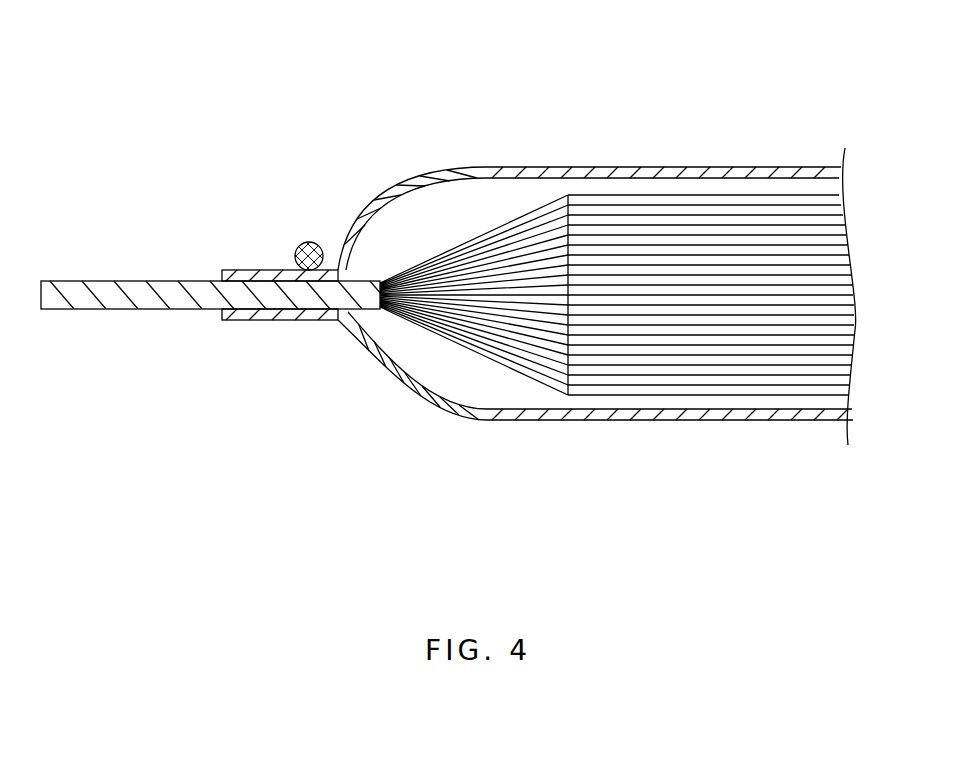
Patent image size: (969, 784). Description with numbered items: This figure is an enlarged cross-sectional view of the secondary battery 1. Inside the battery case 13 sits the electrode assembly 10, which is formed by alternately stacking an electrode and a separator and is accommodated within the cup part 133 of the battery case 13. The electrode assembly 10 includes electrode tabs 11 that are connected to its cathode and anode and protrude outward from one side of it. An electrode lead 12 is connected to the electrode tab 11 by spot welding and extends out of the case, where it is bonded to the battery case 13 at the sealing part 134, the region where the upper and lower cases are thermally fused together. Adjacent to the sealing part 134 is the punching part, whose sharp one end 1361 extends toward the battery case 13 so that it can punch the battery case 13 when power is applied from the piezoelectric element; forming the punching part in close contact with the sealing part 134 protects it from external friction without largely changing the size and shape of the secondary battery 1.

The secondary battery 1 is at (551, 71).
The electrode assembly 10 is at (707, 360).
The electrode tab 11 is at (504, 248).
The electrode lead 12 is at (127, 300).
The battery case 13 is at (714, 175).
The cup part 133 is at (407, 392).
The sealing part 134 is at (280, 318).
The sharp one end 1361 is at (309, 242).